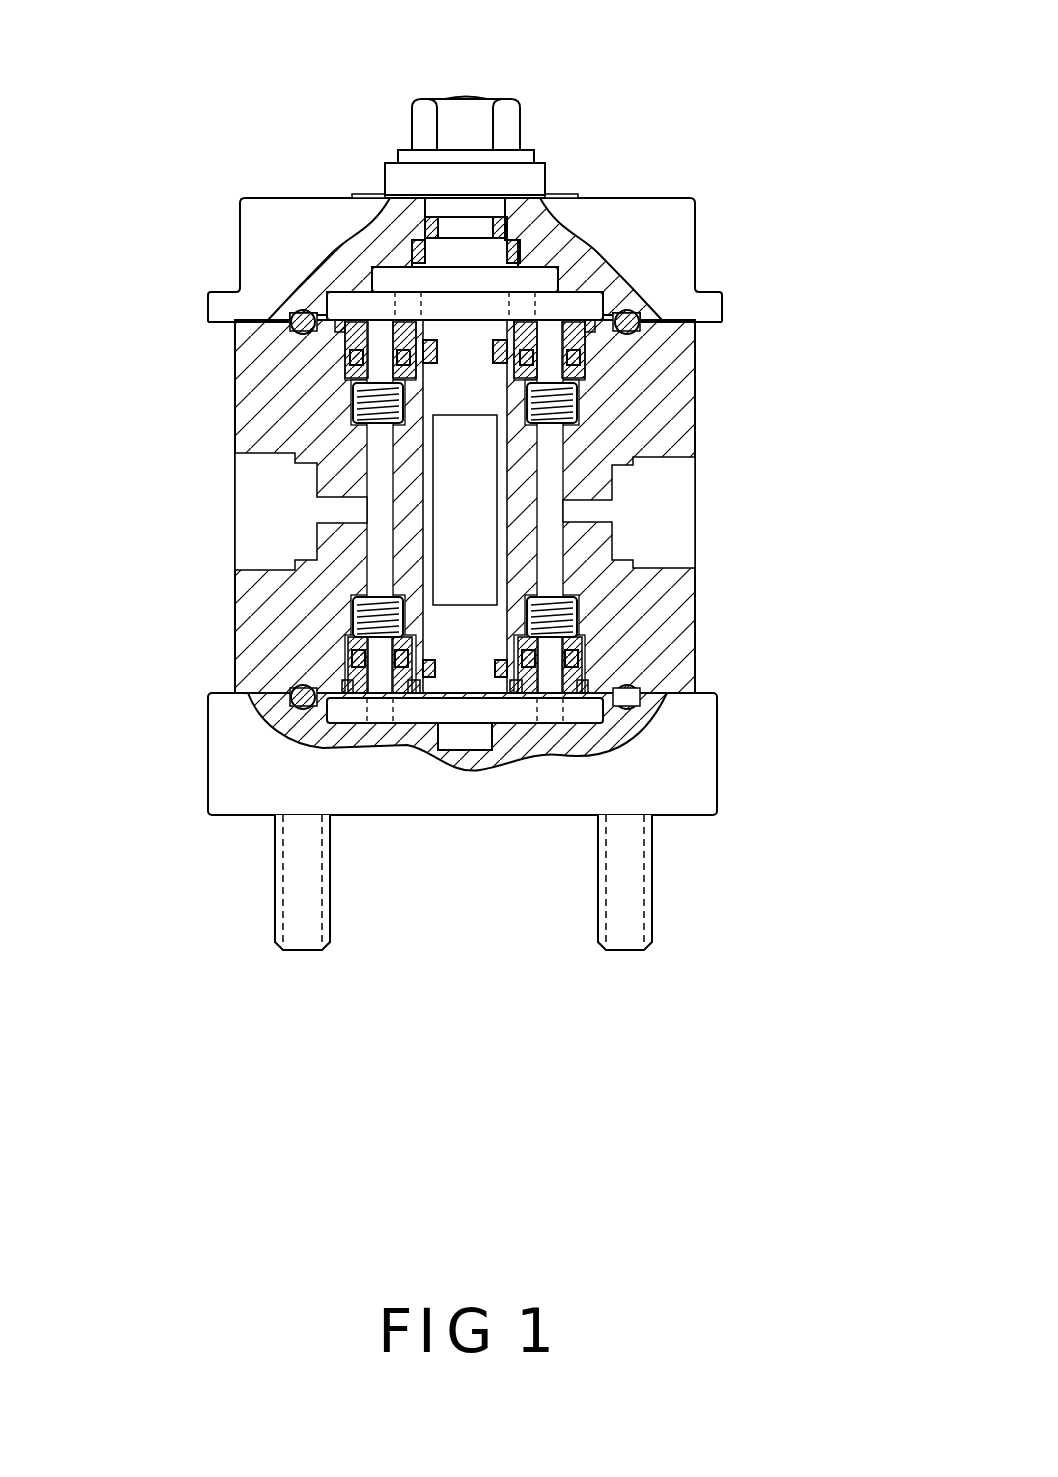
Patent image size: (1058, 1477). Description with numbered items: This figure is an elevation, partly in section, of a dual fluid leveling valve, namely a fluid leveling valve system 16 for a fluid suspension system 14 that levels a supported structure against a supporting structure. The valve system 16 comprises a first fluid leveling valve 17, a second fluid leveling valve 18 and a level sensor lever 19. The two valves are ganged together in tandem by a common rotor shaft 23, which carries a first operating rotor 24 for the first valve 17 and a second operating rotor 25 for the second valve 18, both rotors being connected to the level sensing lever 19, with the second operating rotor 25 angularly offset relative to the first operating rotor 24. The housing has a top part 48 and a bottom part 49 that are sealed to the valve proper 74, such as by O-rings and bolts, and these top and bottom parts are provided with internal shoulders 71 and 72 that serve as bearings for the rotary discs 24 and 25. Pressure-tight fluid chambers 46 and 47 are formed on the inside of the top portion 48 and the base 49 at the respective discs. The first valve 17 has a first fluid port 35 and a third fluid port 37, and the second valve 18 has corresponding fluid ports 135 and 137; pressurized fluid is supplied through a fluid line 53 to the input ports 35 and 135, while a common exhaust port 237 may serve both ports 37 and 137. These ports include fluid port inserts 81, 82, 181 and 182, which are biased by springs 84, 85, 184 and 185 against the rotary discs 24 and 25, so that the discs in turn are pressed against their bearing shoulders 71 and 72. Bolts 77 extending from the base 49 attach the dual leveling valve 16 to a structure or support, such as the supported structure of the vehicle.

The fluid suspension system 14 is at (192, 308).
The fluid leveling valve system 16 is at (362, 195).
The first fluid leveling valve 17 is at (590, 283).
The second fluid leveling valve 18 is at (337, 732).
The level sensor lever 19 is at (535, 176).
The common rotor shaft 23 is at (443, 722).
The first operating rotor 24 is at (329, 299).
The second operating rotor 25 is at (643, 700).
The first fluid port 35 is at (312, 257).
The third fluid port 37 is at (553, 328).
The fluid chamber 46 is at (370, 296).
The fluid chamber 47 is at (517, 732).
The top part of the leveling valve housing 48 is at (667, 287).
The bottom part of the leveling valve housing 49 is at (690, 778).
The fluid line 53 is at (335, 510).
The internal shoulder 71 is at (592, 293).
The internal shoulder 72 is at (582, 732).
The valve proper 74 is at (693, 605).
The bolts 77 is at (285, 946).
The fluid port insert 81 is at (291, 315).
The fluid port insert 82 is at (645, 320).
The spring 84 is at (360, 410).
The spring 85 is at (578, 410).
The first fluid port 135 is at (342, 724).
The third fluid port 137 is at (643, 698).
The fluid port insert 181 is at (388, 706).
The fluid port insert 182 is at (532, 688).
The spring 184 is at (362, 622).
The spring 185 is at (577, 620).
The common exhaust port 237 is at (592, 512).